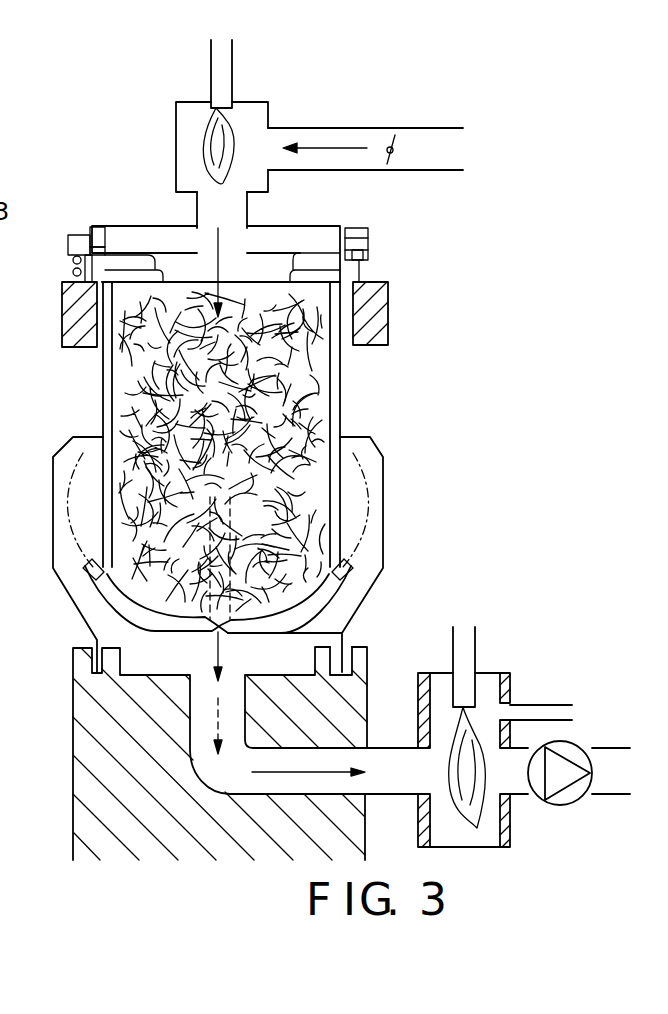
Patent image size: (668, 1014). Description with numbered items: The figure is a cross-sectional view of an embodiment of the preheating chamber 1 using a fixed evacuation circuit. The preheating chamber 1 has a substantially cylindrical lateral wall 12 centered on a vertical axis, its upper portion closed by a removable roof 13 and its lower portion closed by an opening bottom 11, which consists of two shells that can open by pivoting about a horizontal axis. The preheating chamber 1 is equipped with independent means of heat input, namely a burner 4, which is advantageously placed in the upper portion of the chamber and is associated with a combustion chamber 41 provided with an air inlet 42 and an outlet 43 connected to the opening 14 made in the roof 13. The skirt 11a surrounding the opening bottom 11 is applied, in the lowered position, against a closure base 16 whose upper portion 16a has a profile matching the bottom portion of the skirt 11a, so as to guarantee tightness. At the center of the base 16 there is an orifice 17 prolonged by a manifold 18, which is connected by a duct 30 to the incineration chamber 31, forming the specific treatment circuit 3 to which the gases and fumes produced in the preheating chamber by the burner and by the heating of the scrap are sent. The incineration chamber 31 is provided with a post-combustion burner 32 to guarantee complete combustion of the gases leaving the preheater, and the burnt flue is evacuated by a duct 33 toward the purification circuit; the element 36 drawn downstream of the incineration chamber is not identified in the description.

The preheating chamber 1 is at (90, 381).
The treatment circuit 3 is at (424, 648).
The burner 4 is at (192, 86).
The opening bottom 11 is at (102, 588).
The skirt 11a is at (52, 540).
The lateral wall 12 is at (340, 385).
The removable roof 13 is at (287, 243).
The opening 14 is at (227, 267).
The closure base 16 is at (74, 720).
The upper portion of the closure base 16a is at (361, 646).
The orifice 17 is at (198, 673).
The manifold 18 is at (205, 766).
The duct 30 is at (393, 780).
The incineration chamber 31 is at (403, 713).
The post-combustion burner 32 is at (486, 637).
The duct 33 is at (625, 797).
The pump 36 is at (565, 805).
The combustion chamber 41 is at (176, 160).
The air inlet 42 is at (307, 128).
The outlet 43 is at (197, 212).